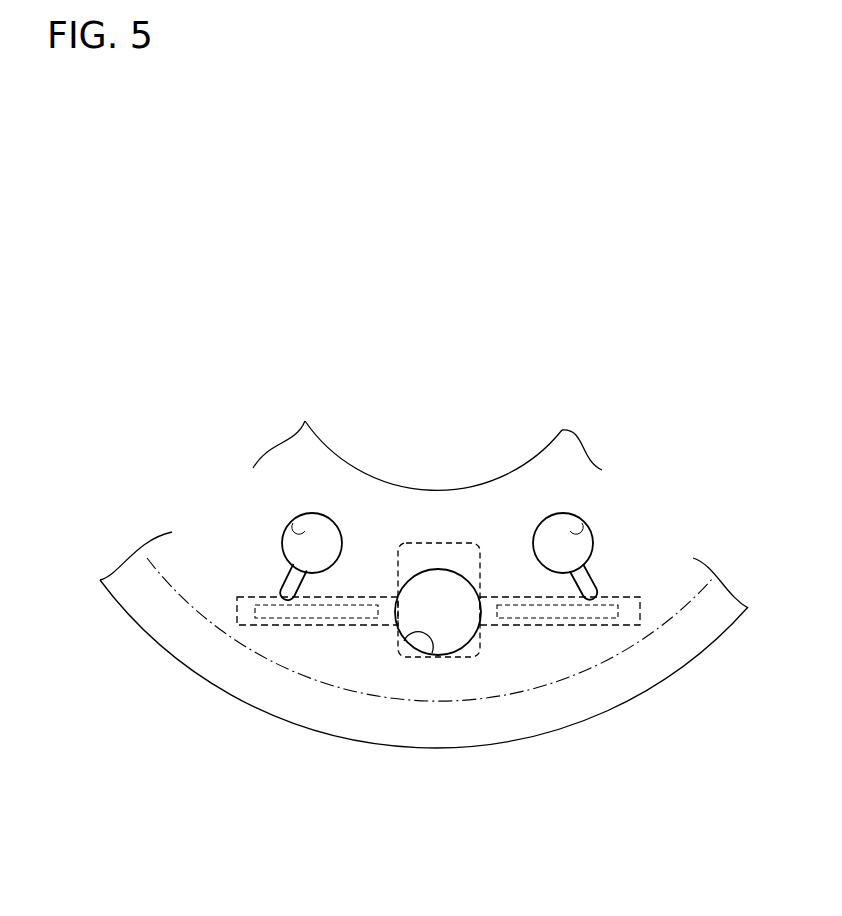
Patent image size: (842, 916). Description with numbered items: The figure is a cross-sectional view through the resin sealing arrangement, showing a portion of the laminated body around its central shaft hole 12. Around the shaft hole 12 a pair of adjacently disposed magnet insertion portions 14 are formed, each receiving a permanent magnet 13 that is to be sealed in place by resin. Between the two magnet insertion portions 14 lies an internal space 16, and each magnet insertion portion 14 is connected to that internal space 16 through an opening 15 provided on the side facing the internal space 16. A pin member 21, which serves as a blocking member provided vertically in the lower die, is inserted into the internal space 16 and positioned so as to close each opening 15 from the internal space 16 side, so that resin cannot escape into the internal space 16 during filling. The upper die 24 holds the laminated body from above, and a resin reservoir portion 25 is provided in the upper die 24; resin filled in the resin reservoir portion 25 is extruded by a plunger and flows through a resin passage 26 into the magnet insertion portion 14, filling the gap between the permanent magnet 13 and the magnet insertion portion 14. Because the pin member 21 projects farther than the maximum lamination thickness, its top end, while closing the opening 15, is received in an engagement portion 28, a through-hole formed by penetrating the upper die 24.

The shaft hole 12 is at (333, 440).
The permanent magnet 13 is at (277, 622).
The magnet insertion portion 14 is at (353, 627).
The opening 15 is at (405, 610).
The internal space 16 is at (437, 560).
The pin member 21 is at (452, 620).
The upper die 24 is at (172, 625).
The resin reservoir portion 25 is at (287, 528).
The resin passage 26 is at (293, 582).
The engagement portion 28 is at (430, 655).